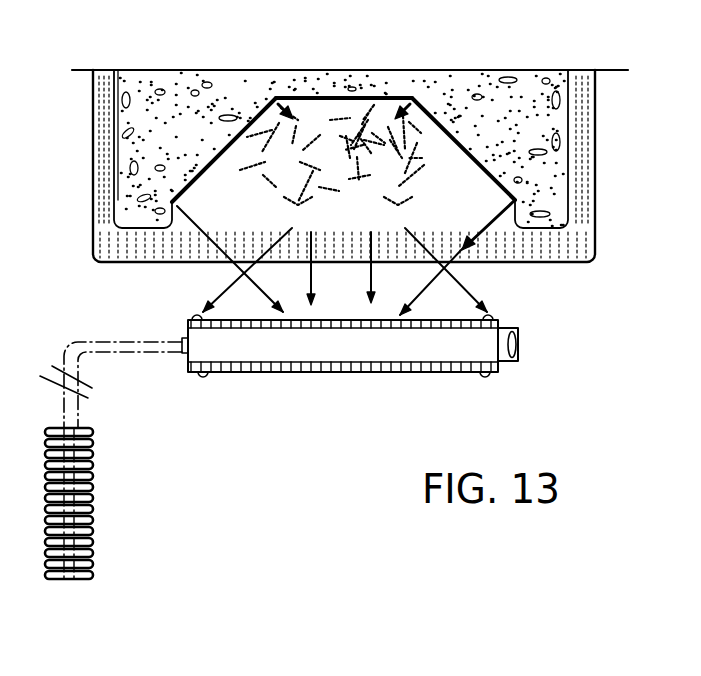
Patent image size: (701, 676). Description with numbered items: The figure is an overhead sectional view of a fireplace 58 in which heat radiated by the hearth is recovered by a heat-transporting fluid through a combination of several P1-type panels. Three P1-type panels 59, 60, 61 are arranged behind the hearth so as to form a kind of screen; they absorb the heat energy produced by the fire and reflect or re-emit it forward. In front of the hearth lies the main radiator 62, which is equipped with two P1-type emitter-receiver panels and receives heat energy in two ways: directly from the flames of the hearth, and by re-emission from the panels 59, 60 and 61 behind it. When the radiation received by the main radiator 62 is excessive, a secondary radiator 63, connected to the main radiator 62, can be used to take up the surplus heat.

The fireplace 58 is at (410, 167).
The P1-type panel 59 is at (250, 112).
The P1-type panel 60 is at (366, 104).
The P1-type panel 61 is at (428, 128).
The main radiator 62 is at (249, 373).
The secondary radiator 63 is at (91, 515).